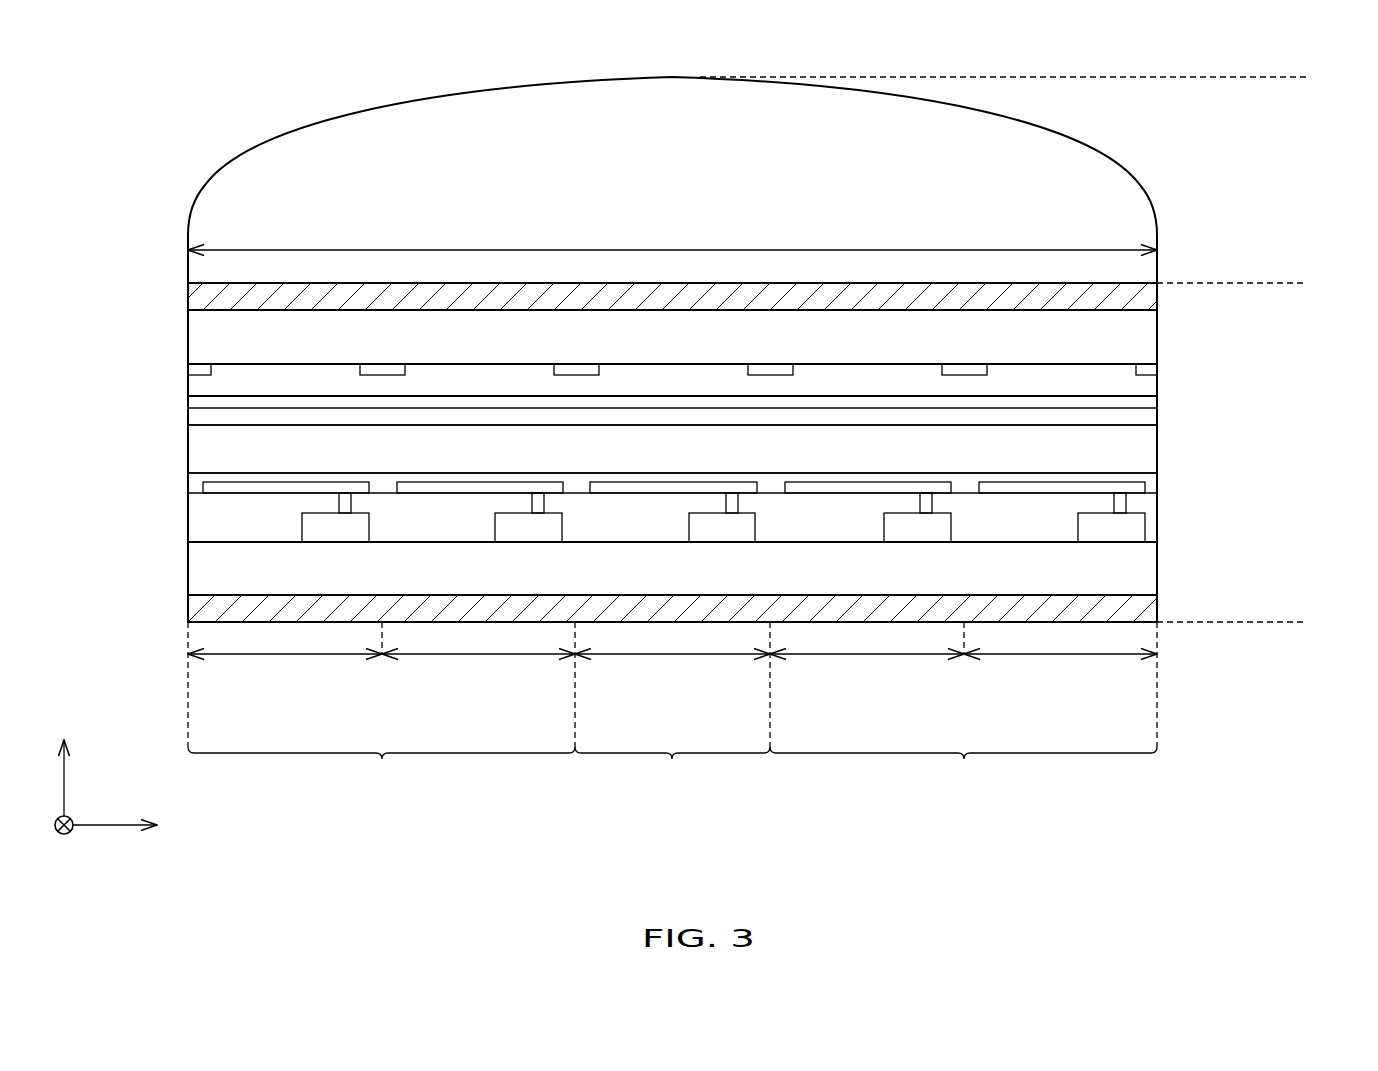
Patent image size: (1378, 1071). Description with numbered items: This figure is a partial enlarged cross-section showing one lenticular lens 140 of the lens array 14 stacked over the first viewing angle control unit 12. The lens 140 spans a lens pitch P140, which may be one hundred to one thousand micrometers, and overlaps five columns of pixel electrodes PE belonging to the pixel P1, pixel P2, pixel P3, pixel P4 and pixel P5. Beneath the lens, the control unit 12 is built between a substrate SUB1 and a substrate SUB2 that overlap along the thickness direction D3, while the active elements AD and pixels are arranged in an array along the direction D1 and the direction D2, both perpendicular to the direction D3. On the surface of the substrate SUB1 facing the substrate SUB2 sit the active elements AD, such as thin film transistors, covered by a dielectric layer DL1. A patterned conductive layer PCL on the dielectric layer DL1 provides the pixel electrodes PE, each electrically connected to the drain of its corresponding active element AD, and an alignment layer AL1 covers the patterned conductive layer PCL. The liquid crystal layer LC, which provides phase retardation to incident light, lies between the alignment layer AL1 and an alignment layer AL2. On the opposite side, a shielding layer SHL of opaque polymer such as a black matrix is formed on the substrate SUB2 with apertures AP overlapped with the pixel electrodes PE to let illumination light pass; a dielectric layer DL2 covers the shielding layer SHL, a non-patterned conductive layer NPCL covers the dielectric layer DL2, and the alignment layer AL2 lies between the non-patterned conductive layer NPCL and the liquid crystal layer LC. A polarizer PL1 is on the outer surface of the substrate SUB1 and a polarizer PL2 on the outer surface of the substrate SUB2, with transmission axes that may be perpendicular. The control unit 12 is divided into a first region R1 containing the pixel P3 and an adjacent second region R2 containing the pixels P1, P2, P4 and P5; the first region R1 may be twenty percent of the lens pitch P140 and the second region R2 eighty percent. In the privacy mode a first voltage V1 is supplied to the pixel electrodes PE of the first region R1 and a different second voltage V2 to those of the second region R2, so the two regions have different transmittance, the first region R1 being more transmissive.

The lens array 14 is at (1306, 77).
The lenticular lens 140 is at (1140, 222).
The first viewing angle control unit 12 is at (1306, 283).
The lens pitch P140 is at (672, 232).
The polarizer PL2 is at (1140, 304).
The substrate SUB2 is at (1140, 339).
The shielding layer SHL is at (196, 371).
The aperture AP is at (360, 370).
The dielectric layer DL2 is at (1140, 386).
The non-patterned conductive layer NPCL is at (188, 401).
The alignment layer AL2 is at (1140, 417).
The liquid crystal layer LC is at (1140, 449).
The alignment layer AL1 is at (1140, 477).
The patterned conductive layer PCL is at (202, 489).
The pixel electrode PE is at (452, 481).
The first voltage V1 is at (732, 481).
The second voltage V2 is at (344, 481).
The active element AD is at (300, 528).
The dielectric layer DL1 is at (1150, 530).
The substrate SUB1 is at (1140, 573).
The polarizer PL1 is at (1140, 609).
The pixel P1 is at (285, 684).
The pixel P2 is at (478, 684).
The pixel P3 is at (672, 684).
The pixel P4 is at (867, 672).
The pixel P5 is at (1060, 684).
The first region R1 is at (672, 771).
The second region R2 is at (672, 771).
The direction D1 is at (136, 827).
The direction D2 is at (46, 843).
The direction D3 is at (65, 759).